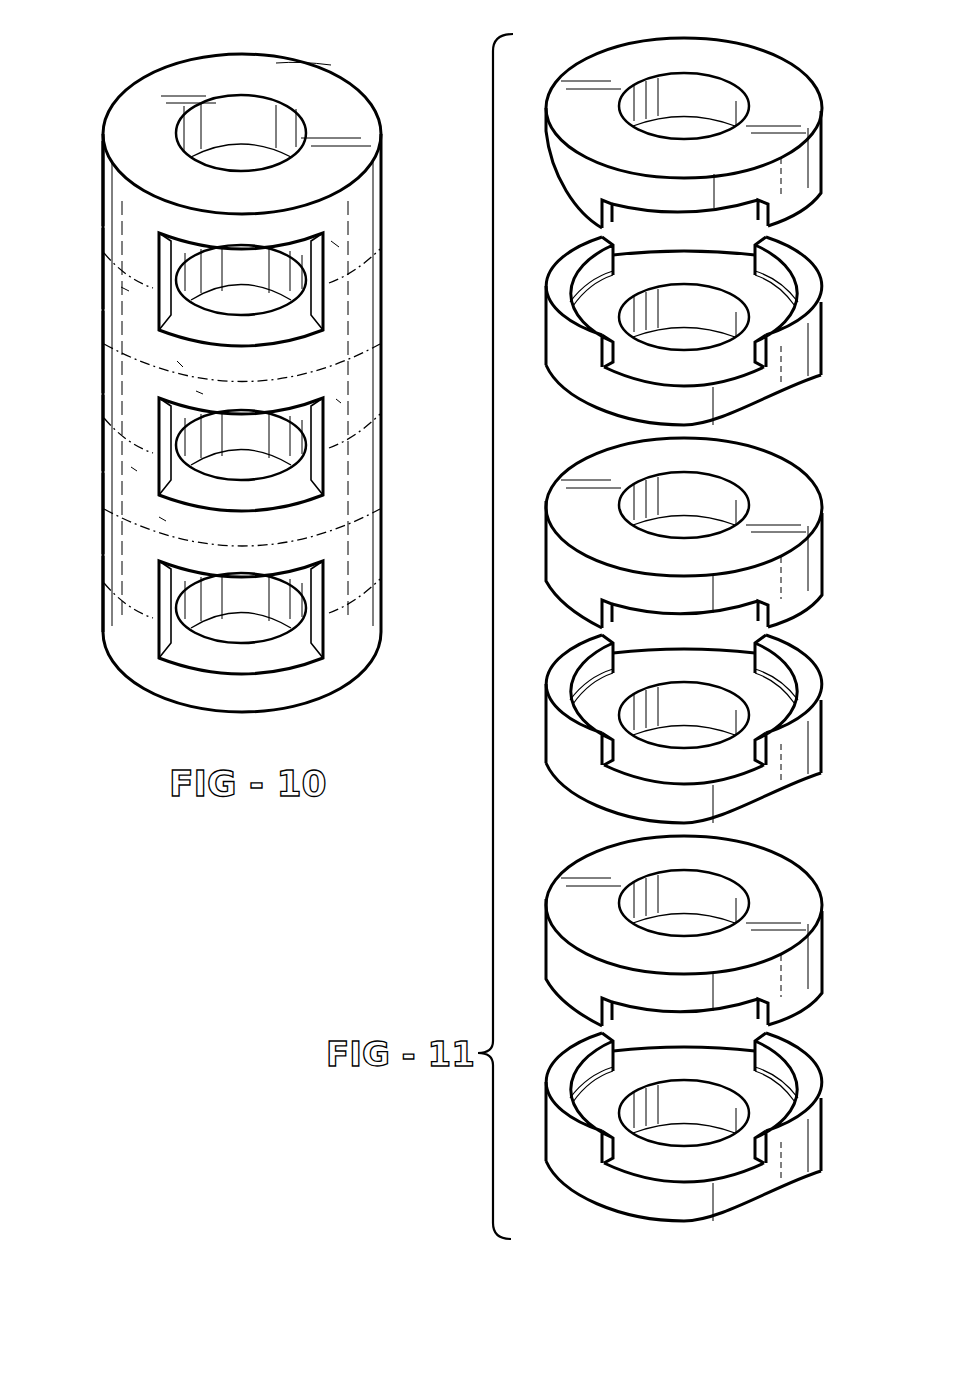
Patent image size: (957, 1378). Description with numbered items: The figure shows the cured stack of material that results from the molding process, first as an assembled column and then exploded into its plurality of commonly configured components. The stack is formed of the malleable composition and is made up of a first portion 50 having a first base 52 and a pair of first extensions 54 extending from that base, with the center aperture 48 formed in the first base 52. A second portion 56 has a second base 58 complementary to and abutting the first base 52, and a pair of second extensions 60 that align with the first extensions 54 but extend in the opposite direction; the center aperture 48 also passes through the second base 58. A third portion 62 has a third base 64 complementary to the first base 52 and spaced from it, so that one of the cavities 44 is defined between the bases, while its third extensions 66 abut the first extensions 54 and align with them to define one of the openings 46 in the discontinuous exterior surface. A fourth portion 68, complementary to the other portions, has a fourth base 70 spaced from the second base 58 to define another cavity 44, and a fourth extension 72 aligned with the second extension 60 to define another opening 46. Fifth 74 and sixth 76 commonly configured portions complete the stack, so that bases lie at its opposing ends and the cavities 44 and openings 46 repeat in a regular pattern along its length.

In FIG. 10, the cavity 44 is at (245, 155).
In FIG. 10, the opening 46 is at (142, 262).
In FIG. 10, the center aperture 48 is at (213, 105).
In FIG. 11, the center aperture 48 is at (672, 490).
In FIG. 10, the first portion 50 is at (412, 392).
In FIG. 11, the first portion 50 is at (817, 437).
In FIG. 10, the first base 52 is at (202, 393).
In FIG. 11, the first base 52 is at (747, 453).
In FIG. 10, the first extension 54 is at (337, 401).
In FIG. 11, the first extension 54 is at (568, 585).
In FIG. 10, the second portion 56 is at (412, 308).
In FIG. 11, the second portion 56 is at (817, 237).
In FIG. 10, the second base 58 is at (182, 366).
In FIG. 11, the second base 58 is at (674, 257).
In FIG. 10, the second extension 60 is at (128, 290).
In FIG. 11, the second extension 60 is at (545, 335).
In FIG. 10, the third portion 62 is at (412, 394).
In FIG. 11, the third portion 62 is at (817, 632).
In FIG. 10, the third base 64 is at (165, 520).
In FIG. 11, the third base 64 is at (740, 792).
In FIG. 10, the third extension 66 is at (136, 470).
In FIG. 11, the third extension 66 is at (565, 743).
In FIG. 10, the fourth portion 68 is at (412, 140).
In FIG. 11, the fourth portion 68 is at (817, 42).
In FIG. 10, the fourth base 70 is at (333, 90).
In FIG. 11, the fourth base 70 is at (680, 45).
In FIG. 10, the fourth extension 72 is at (340, 242).
In FIG. 11, the fourth extension 72 is at (552, 185).
In FIG. 10, the fifth portion 74 is at (412, 472).
In FIG. 11, the fifth portion 74 is at (817, 840).
In FIG. 10, the sixth portion 76 is at (412, 555).
In FIG. 11, the sixth portion 76 is at (817, 1032).